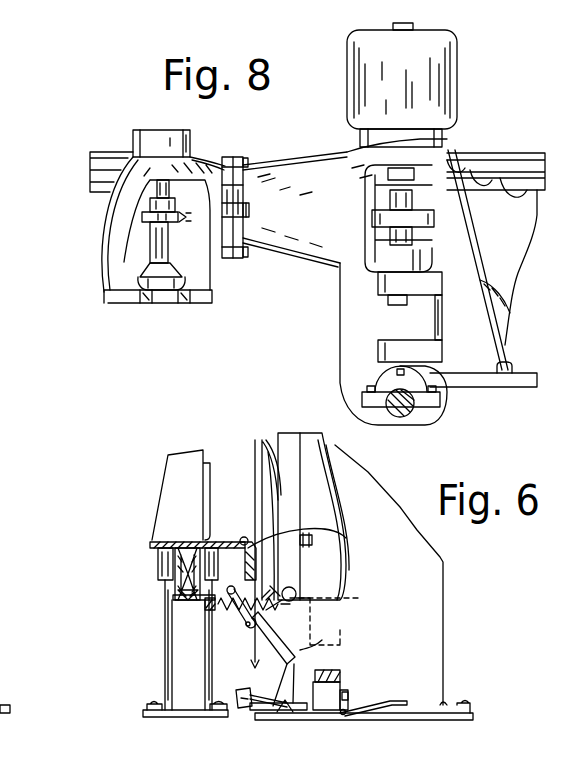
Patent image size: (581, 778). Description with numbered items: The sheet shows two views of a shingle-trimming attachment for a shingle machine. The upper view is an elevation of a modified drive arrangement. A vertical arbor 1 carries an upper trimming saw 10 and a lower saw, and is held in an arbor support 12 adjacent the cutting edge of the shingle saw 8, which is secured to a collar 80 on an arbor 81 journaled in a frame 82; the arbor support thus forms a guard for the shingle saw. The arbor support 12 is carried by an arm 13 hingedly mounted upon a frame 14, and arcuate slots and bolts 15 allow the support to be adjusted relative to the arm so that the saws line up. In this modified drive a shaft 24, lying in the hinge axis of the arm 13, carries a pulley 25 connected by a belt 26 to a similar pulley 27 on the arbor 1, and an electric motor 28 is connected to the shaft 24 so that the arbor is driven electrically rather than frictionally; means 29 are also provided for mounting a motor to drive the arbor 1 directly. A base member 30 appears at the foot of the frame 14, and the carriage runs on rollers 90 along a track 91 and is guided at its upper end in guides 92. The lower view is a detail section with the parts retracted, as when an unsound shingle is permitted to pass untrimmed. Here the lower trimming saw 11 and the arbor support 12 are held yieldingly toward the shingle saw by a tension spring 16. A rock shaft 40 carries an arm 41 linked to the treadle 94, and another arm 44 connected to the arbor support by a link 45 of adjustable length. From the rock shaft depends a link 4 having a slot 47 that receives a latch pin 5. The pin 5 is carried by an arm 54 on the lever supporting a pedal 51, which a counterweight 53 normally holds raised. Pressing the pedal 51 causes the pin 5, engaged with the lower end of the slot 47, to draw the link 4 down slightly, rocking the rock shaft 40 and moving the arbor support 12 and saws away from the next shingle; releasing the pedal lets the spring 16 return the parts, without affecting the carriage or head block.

In FIG. 8, the arbor 1 is at (156, 194).
In FIG. 8, the shingle saw 8 is at (492, 252).
In FIG. 6, the shingle saw 8 is at (253, 492).
In FIG. 8, the upper trimming saw 10 is at (138, 290).
In FIG. 8, the arbor support 12 is at (122, 303).
In FIG. 6, the arbor support 12 is at (330, 474).
In FIG. 8, the arm 13 is at (322, 252).
In FIG. 8, the frame 14 is at (466, 322).
In FIG. 8, the arcuate slots and bolts 15 is at (246, 164).
In FIG. 8, the shaft 24 is at (378, 300).
In FIG. 8, the pulley 25 is at (434, 224).
In FIG. 8, the belt 26 is at (192, 222).
In FIG. 8, the pulley 27 is at (142, 220).
In FIG. 8, the electric motor 28 is at (402, 85).
In FIG. 8, the motor mounting means 29 is at (148, 146).
In FIG. 8, the base plate 30 is at (512, 370).
In FIG. 8, the arbor 81 is at (404, 408).
In FIG. 8, the frame 82 is at (370, 410).
In FIG. 6, the frame 82 is at (364, 582).
In FIG. 8, the guides 92 is at (518, 152).
In FIG. 6, the link 4 is at (254, 636).
In FIG. 6, the latch pin 5 is at (306, 650).
In FIG. 6, the lower trimming saw 11 is at (340, 527).
In FIG. 6, the tension spring 16 is at (300, 598).
In FIG. 6, the rock shaft 40 is at (244, 622).
In FIG. 6, the arm 41 is at (335, 615).
In FIG. 6, the arm 44 is at (232, 612).
In FIG. 6, the link 45 is at (264, 598).
In FIG. 6, the slot 47 is at (270, 662).
In FIG. 6, the pedal 51 is at (392, 702).
In FIG. 6, the counterweight 53 is at (250, 708).
In FIG. 6, the arm 54 is at (290, 677).
In FIG. 6, the collar 80 is at (255, 457).
In FIG. 6, the rollers 90 is at (180, 568).
In FIG. 6, the track 91 is at (180, 596).
In FIG. 6, the treadle 94 is at (341, 674).